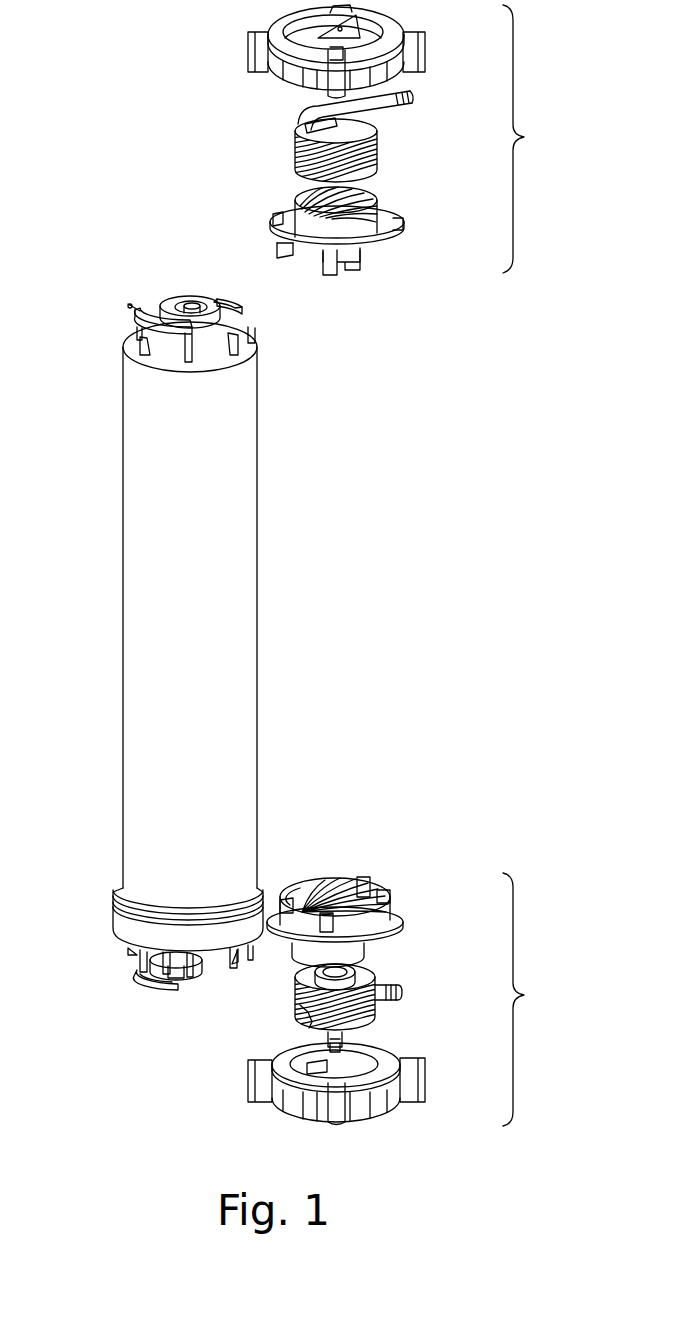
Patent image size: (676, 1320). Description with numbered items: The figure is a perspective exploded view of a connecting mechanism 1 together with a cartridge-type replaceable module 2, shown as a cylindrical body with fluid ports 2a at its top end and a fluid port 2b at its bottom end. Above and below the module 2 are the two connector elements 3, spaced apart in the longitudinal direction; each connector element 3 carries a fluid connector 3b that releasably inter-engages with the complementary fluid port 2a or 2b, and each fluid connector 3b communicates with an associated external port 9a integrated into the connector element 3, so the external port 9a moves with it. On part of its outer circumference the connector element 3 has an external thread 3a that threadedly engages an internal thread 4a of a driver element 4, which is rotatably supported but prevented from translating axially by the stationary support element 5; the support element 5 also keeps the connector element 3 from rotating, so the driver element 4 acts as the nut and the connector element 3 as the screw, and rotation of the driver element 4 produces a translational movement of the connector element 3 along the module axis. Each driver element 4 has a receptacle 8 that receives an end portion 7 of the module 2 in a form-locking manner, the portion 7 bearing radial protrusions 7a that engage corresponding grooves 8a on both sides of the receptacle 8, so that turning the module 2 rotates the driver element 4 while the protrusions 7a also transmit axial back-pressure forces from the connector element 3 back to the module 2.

The connecting mechanism 1 is at (526, 565).
The cartridge-type replaceable module 2 is at (253, 655).
The fluid port 2a is at (187, 298).
The fluid port 2b is at (197, 978).
The connector element 3 is at (375, 150).
The external thread 3a is at (377, 147).
The fluid connector 3b is at (340, 966).
The driver element 4 is at (407, 222).
The internal thread 4a is at (367, 185).
The support element 5 is at (415, 53).
The portion of the module 7 is at (138, 310).
The radial protrusion 7a is at (128, 304).
The receptacle 8 is at (315, 275).
The groove 8a is at (280, 250).
The external port 9a is at (417, 98).